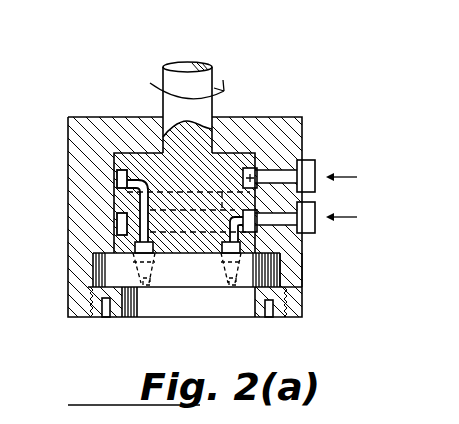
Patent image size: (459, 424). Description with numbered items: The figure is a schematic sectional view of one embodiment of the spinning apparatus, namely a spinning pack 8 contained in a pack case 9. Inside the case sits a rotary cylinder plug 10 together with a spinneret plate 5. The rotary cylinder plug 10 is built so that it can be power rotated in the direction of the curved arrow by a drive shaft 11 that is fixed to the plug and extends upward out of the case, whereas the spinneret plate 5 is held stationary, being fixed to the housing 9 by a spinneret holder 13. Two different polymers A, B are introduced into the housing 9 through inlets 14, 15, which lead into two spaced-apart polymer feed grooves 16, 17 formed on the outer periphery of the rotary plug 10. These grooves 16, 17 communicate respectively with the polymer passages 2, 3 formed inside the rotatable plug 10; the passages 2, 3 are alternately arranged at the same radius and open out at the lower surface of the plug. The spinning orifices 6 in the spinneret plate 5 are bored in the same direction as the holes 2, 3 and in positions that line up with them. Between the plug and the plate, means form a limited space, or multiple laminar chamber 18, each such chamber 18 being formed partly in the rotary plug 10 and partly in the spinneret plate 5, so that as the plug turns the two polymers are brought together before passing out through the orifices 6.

The polymer passage 2 is at (142, 192).
The polymer passage 3 is at (228, 232).
The spinneret plate 5 is at (122, 268).
The spinning orifices 6 is at (228, 268).
The spinning pack 8 is at (322, 115).
The pack case 9 is at (293, 272).
The rotary cylinder plug 10 is at (213, 151).
The drive shaft 11 is at (182, 77).
The spinneret holder 13 is at (270, 318).
The inlet 14 is at (275, 177).
The inlet 15 is at (303, 247).
The polymer feed groove 16 is at (238, 177).
The polymer feed groove 17 is at (243, 207).
The multiple laminar chamber 18 is at (188, 213).
The polymer A is at (350, 178).
The polymer B is at (349, 217).